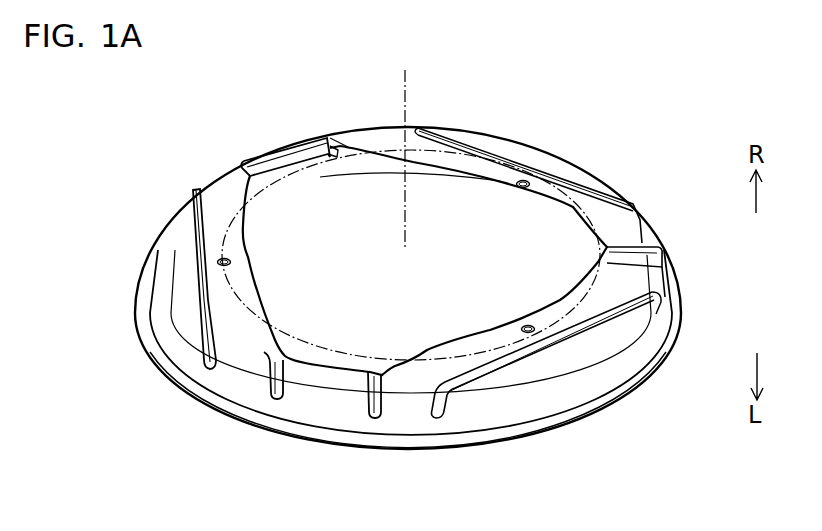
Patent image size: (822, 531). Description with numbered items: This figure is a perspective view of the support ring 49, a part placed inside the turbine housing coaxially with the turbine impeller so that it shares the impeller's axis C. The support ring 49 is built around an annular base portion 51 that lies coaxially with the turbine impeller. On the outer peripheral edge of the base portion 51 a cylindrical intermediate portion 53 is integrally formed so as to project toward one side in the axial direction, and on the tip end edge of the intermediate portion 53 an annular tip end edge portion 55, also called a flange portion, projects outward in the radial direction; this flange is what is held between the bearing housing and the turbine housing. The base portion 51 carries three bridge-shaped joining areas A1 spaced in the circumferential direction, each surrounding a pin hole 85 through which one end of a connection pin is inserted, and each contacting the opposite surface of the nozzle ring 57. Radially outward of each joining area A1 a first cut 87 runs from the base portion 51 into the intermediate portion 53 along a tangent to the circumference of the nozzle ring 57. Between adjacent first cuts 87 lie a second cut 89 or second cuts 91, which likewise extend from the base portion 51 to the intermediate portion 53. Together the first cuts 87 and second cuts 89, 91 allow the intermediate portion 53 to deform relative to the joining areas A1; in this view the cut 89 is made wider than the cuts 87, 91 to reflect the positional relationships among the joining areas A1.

The support ring 49 is at (286, 142).
The base portion 51 is at (175, 238).
The intermediate portion 53 is at (318, 420).
The tip end edge portion 55 is at (448, 450).
The nozzle ring 57 is at (393, 360).
The pin hole 85 is at (231, 262).
The first cut 87 is at (200, 268).
The second cut 89 is at (667, 252).
The second cut 91 is at (272, 398).
The joining area A1 is at (235, 232).
The axis C is at (408, 84).